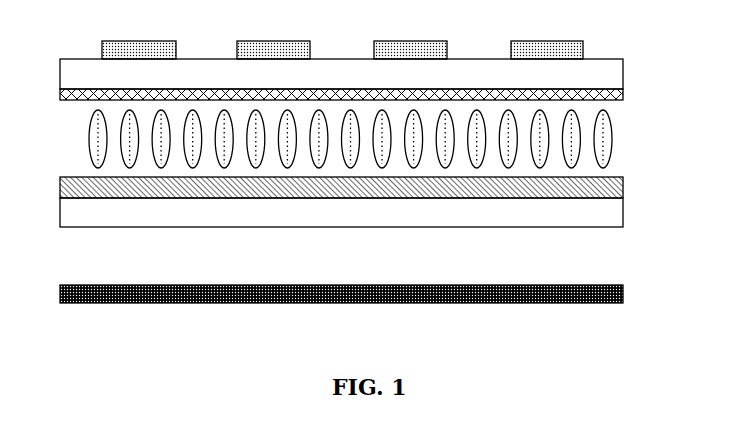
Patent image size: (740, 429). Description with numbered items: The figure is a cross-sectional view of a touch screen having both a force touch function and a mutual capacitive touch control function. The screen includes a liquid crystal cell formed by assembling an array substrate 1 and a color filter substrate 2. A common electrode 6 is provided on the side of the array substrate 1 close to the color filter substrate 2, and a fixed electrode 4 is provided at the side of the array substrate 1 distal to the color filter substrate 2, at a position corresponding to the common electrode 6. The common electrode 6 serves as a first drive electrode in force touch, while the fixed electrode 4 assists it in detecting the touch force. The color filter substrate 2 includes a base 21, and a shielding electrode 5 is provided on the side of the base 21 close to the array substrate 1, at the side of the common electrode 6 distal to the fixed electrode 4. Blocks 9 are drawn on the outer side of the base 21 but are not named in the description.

The array substrate 1 is at (354, 222).
The color filter substrate 2 is at (346, 50).
The base 21 is at (80, 78).
The fixed electrode 4 is at (533, 300).
The shielding electrode 5 is at (465, 97).
The common electrode 6 is at (190, 186).
The color resist blocks 9 is at (270, 52).